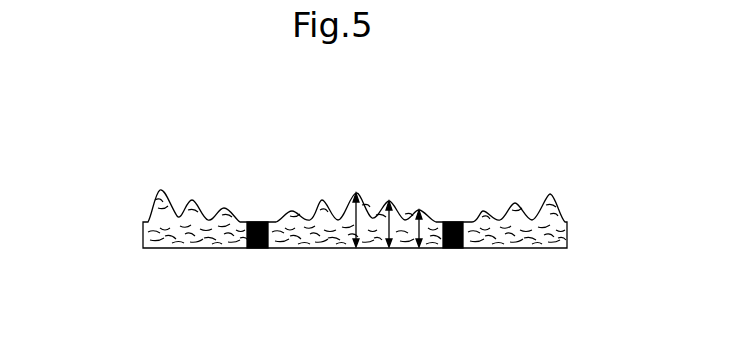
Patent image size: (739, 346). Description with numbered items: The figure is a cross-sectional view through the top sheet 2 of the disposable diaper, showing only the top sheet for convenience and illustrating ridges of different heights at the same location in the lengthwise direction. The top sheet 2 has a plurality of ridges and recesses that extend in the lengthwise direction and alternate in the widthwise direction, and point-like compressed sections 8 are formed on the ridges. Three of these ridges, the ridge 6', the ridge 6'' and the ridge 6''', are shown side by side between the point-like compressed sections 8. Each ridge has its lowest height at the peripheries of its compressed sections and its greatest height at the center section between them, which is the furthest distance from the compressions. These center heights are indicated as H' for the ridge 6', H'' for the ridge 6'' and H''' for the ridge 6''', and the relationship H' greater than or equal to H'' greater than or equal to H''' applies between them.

The top sheet 2 is at (168, 155).
The point-like compressed sections 8 is at (255, 222).
The ridge 6' is at (352, 174).
The ridge 6'' is at (392, 179).
The ridge 6''' is at (433, 183).
The height of ridge 6' H' is at (330, 257).
The height of ridge 6'' H'' is at (369, 257).
The height of ridge 6''' H''' is at (446, 264).